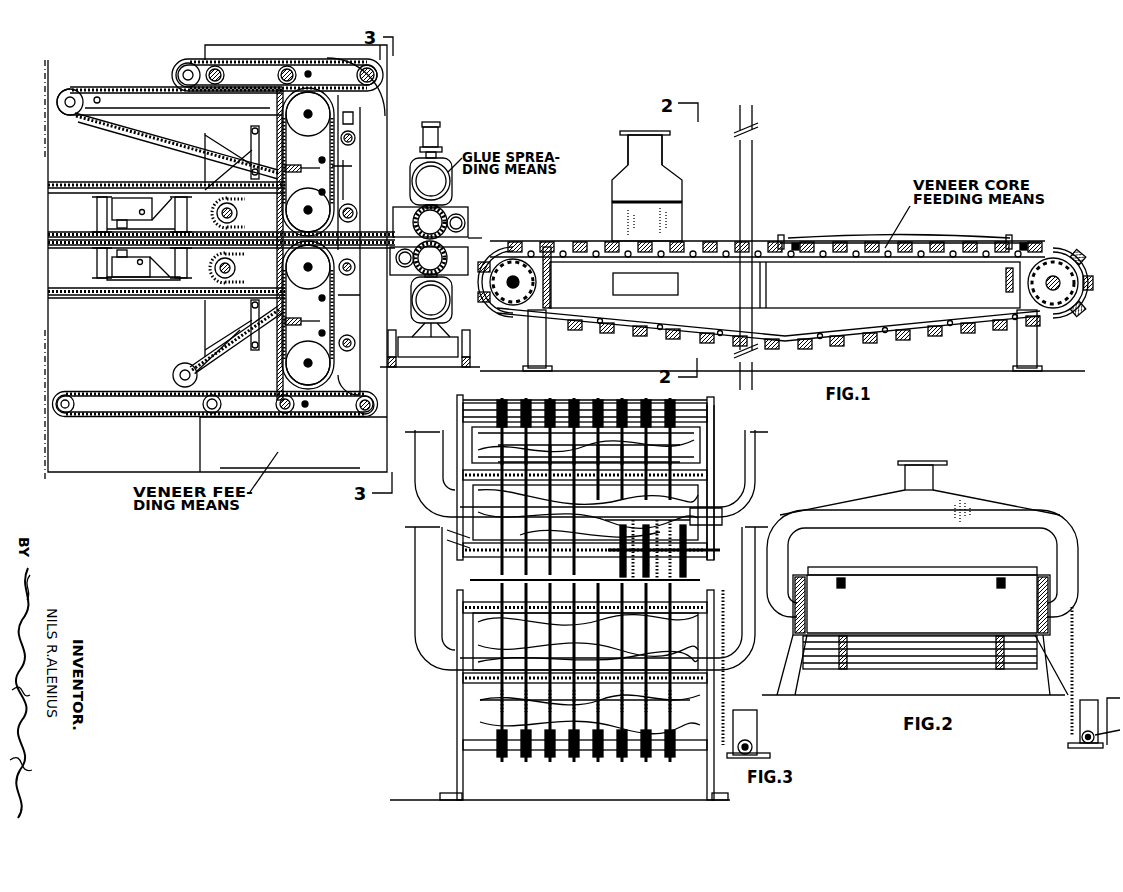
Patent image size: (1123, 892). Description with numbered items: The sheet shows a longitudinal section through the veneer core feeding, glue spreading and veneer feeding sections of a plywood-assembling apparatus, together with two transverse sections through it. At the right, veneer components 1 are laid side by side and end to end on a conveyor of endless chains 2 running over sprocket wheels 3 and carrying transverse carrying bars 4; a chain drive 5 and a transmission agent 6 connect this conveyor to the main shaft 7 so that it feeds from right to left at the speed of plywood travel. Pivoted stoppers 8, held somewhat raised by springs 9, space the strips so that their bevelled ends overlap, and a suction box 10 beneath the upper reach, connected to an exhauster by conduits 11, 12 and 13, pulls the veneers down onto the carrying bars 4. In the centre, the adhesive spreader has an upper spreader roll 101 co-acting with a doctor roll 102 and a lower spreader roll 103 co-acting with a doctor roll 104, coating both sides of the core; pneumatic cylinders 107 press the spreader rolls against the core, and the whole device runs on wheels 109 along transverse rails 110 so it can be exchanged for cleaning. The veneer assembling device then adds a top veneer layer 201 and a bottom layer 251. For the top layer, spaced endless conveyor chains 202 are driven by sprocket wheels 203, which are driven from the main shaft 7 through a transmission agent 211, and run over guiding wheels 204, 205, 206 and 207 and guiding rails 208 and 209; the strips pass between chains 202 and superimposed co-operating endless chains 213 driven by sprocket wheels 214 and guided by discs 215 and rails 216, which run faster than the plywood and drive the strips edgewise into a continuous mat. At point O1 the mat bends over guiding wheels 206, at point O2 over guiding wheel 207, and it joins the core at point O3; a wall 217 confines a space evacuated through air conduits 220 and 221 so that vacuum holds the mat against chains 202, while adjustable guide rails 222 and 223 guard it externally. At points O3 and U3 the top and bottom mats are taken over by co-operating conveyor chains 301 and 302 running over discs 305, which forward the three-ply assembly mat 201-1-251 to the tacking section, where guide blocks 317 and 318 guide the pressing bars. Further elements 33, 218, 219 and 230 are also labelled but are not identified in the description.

In FIG. 1, the veneer components 1 is at (860, 238).
In FIG. 1, the endless chains 2 is at (922, 253).
In FIG. 1, the sprocket wheels 3 is at (1051, 273).
In FIG. 1, the transverse carrying bars 4 is at (968, 248).
In FIG. 2, the chain drive 5 is at (1078, 652).
In FIG. 2, the transmission agent 6 is at (1090, 703).
In FIG. 3, the main shaft 7 is at (752, 747).
In FIG. 1, the pivoted stoppers 8 is at (785, 242).
In FIG. 1, the springs 9 is at (795, 245).
In FIG. 1, the suction box 10 is at (696, 282).
In FIG. 2, the conduit 11 is at (785, 567).
In FIG. 1, the conduit 12 is at (668, 229).
In FIG. 2, the conduit 12 is at (1068, 565).
In FIG. 1, the conduit 13 is at (657, 153).
In FIG. 2, the conduit 13 is at (928, 490).
In FIG. 1, the drive sprocket 33 is at (518, 267).
In FIG. 1, the upper spreader roll 101 is at (447, 210).
In FIG. 1, the doctor roll 102 is at (464, 223).
In FIG. 1, the lower spreader roll 103 is at (447, 247).
In FIG. 1, the doctor roll 104 is at (405, 265).
In FIG. 1, the pneumatic cylinders 107 is at (442, 145).
In FIG. 1, the wheels 109 is at (393, 332).
In FIG. 1, the rails 110 is at (393, 367).
In FIG. 1, the top veneer layer 201 is at (131, 88).
In FIG. 1, the endless conveyor chains 202 is at (70, 90).
In FIG. 1, the sprocket wheels 203 is at (215, 203).
In FIG. 1, the guiding wheel 204 is at (248, 170).
In FIG. 1, the guiding wheel 205 is at (70, 112).
In FIG. 1, the guiding wheels 206 is at (298, 108).
In FIG. 3, the guiding wheel 207 is at (673, 530).
In FIG. 1, the guiding rail 208 is at (144, 99).
In FIG. 1, the guiding rail 209 is at (322, 170).
In FIG. 3, the transmission agent 211 is at (758, 722).
In FIG. 1, the co-operating endless chains 213 is at (177, 67).
In FIG. 3, the co-operating endless chains 213 is at (507, 402).
In FIG. 1, the sprocket wheels 214 is at (377, 78).
In FIG. 1, the discs 215 is at (190, 63).
In FIG. 1, the rails 216 is at (239, 60).
In FIG. 1, the wall 217 is at (280, 130).
In FIG. 3, the side frame 218 is at (715, 422).
In FIG. 3, the side frame 219 is at (457, 420).
In FIG. 3, the air conduit 220 is at (746, 468).
In FIG. 3, the air conduit 221 is at (423, 477).
In FIG. 1, the guide rail 222 is at (352, 148).
In FIG. 3, the guide rail 222 is at (587, 407).
In FIG. 1, the guide rail 223 is at (356, 190).
In FIG. 3, the guide rail 223 is at (483, 523).
In FIG. 3, the cross beam 230 is at (692, 410).
In FIG. 1, the bottom layer 251 is at (134, 392).
In FIG. 1, the lower conveyor chains 301 is at (187, 288).
In FIG. 1, the upper conveyor chains 302 is at (93, 186).
In FIG. 1, the discs 305 is at (300, 213).
In FIG. 3, the discs 305 is at (687, 540).
In FIG. 1, the guide block 317 is at (142, 277).
In FIG. 1, the guide block 318 is at (141, 205).
In FIG. 1, the three-ply assembly mat 201-1-251 is at (70, 246).
In FIG. 1, the bending point O1 is at (309, 70).
In FIG. 1, the bending point O2 is at (352, 206).
In FIG. 1, the joining point O3 is at (352, 258).
In FIG. 1, the joining point U3 is at (282, 256).